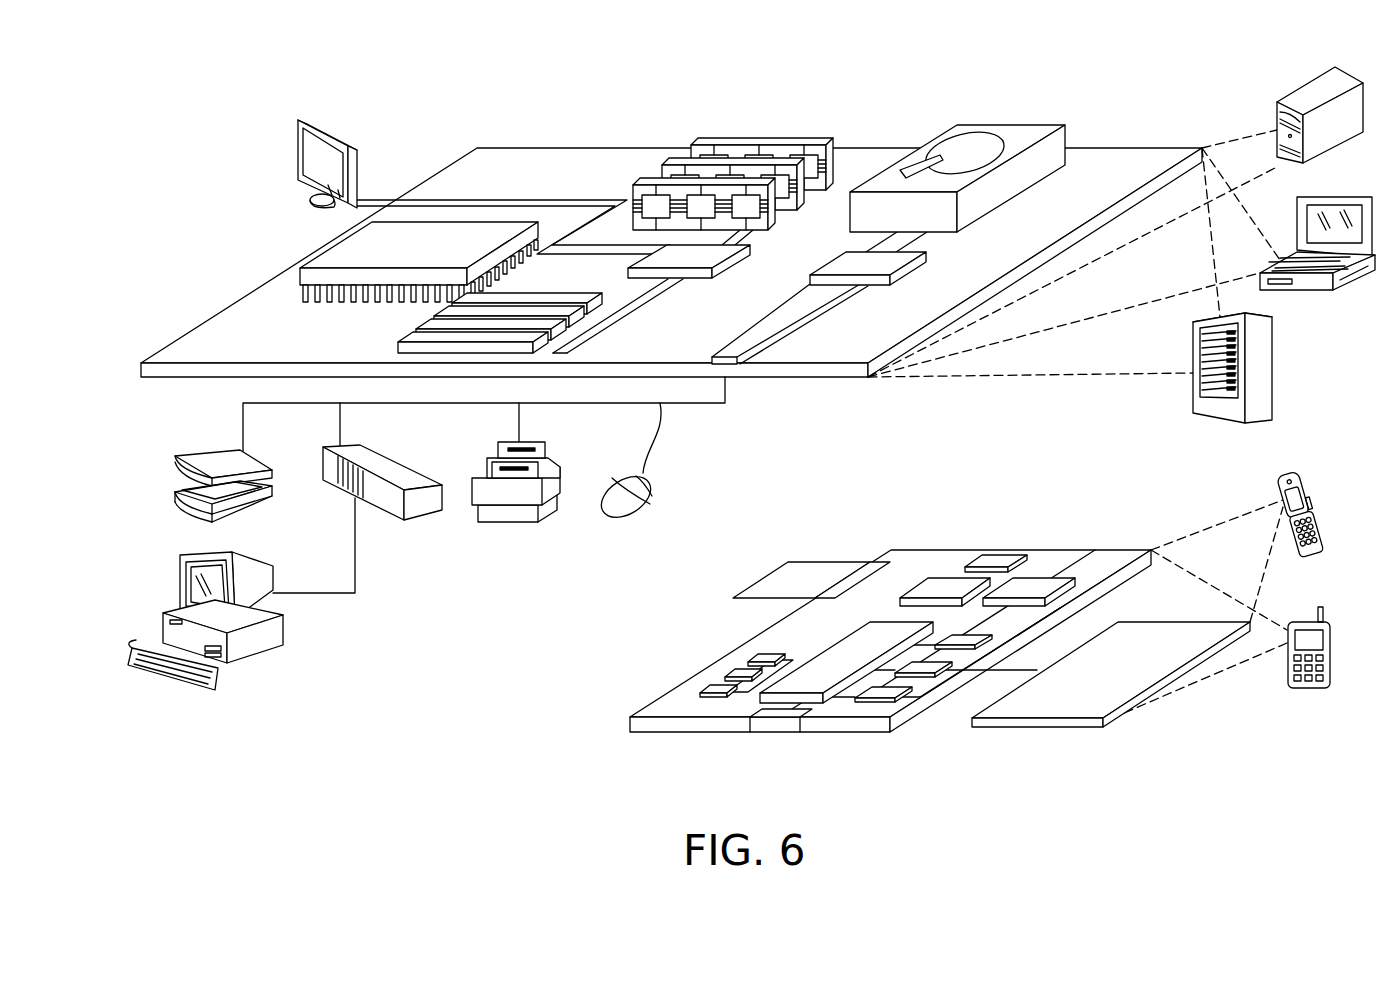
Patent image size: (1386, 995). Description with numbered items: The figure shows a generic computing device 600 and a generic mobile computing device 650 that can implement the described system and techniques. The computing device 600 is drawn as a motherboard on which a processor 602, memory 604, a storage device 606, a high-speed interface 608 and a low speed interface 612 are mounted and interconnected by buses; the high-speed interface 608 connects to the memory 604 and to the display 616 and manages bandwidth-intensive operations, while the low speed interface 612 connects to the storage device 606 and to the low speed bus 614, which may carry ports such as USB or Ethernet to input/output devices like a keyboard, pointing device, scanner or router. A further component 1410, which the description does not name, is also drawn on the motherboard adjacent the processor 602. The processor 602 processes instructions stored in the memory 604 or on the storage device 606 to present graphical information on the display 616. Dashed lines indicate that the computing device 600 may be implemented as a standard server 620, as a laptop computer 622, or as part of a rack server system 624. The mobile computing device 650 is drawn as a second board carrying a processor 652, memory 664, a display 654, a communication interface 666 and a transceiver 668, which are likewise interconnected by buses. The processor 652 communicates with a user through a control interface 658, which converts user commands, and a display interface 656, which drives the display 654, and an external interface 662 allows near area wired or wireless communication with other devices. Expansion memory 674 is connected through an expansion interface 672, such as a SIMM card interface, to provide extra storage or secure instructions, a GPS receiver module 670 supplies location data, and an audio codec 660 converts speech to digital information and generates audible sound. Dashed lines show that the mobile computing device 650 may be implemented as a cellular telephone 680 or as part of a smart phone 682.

The computing device 600 is at (427, 92).
The processor 602 is at (322, 252).
The memory 604 is at (767, 142).
The storage device 606 is at (995, 122).
The high-speed interface 608 is at (701, 253).
The low speed interface 612 is at (838, 257).
The low speed bus 614 is at (730, 350).
The display 616 is at (303, 117).
The standard server 620 is at (1298, 95).
The laptop computer 622 is at (1352, 195).
The rack server system 624 is at (1273, 365).
The memory cards 1410 is at (427, 330).
The mobile computing device 650 is at (584, 748).
The processor 652 is at (813, 667).
The display 654 is at (1150, 637).
The display interface 656 is at (892, 692).
The control interface 658 is at (928, 665).
The audio codec 660 is at (967, 637).
The external interface 662 is at (777, 717).
The memory 664 is at (730, 677).
The communication interface 666 is at (947, 582).
The transceiver 668 is at (1037, 582).
The GPS receiver module 670 is at (997, 560).
The expansion interface 672 is at (870, 562).
The expansion memory 674 is at (790, 562).
The cellular telephone 680 is at (1295, 472).
The smart phone 682 is at (1303, 622).